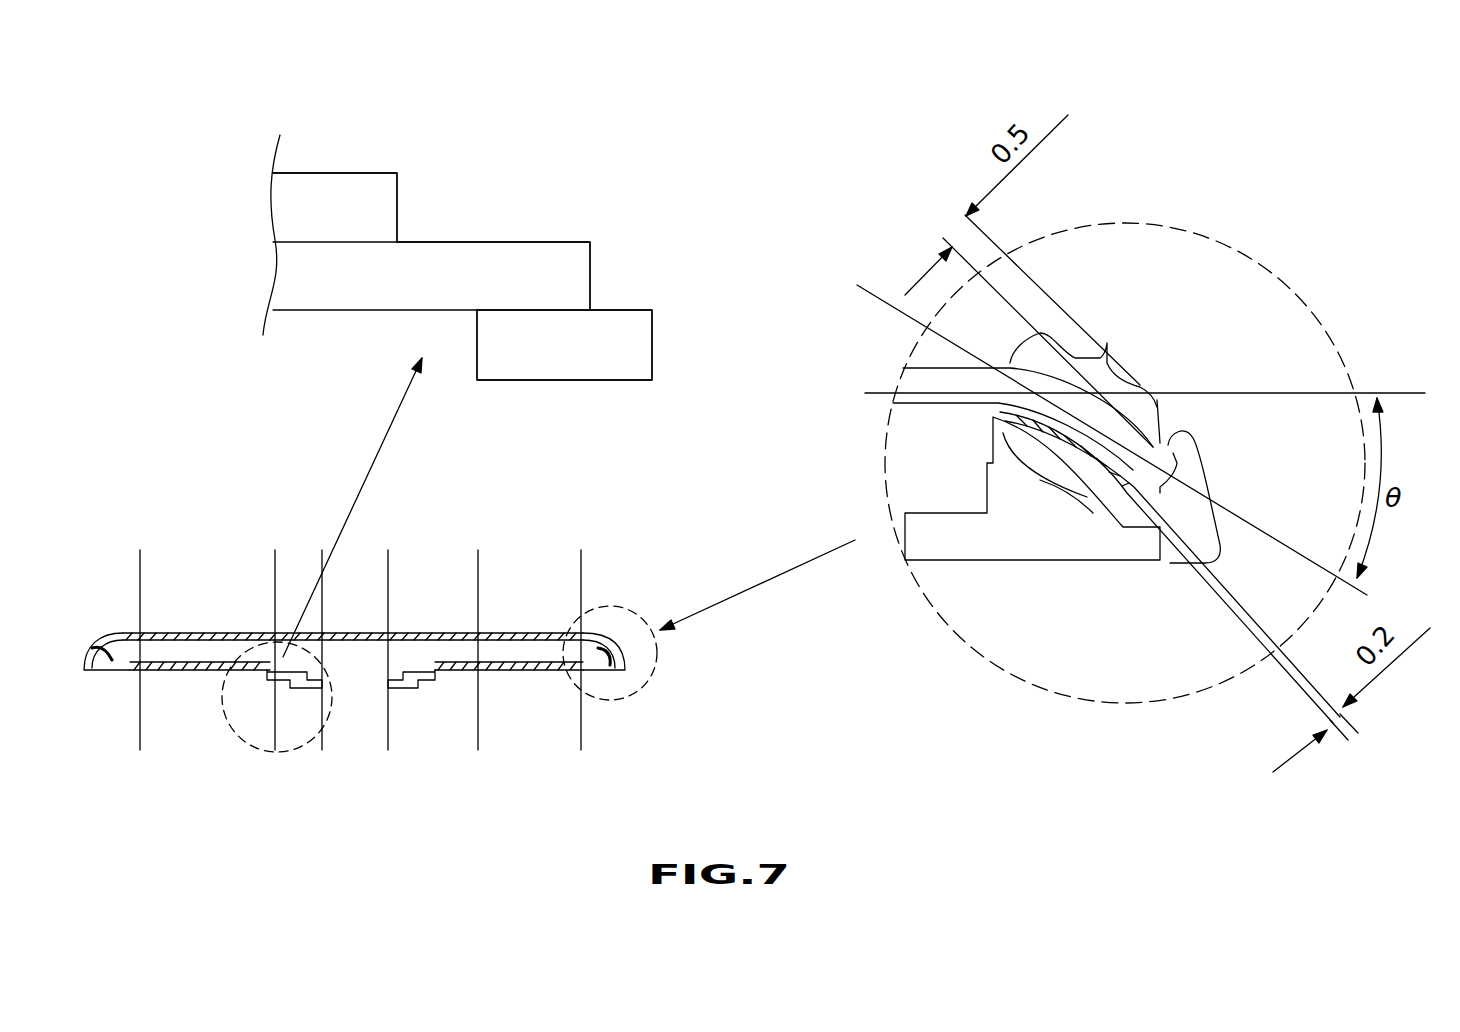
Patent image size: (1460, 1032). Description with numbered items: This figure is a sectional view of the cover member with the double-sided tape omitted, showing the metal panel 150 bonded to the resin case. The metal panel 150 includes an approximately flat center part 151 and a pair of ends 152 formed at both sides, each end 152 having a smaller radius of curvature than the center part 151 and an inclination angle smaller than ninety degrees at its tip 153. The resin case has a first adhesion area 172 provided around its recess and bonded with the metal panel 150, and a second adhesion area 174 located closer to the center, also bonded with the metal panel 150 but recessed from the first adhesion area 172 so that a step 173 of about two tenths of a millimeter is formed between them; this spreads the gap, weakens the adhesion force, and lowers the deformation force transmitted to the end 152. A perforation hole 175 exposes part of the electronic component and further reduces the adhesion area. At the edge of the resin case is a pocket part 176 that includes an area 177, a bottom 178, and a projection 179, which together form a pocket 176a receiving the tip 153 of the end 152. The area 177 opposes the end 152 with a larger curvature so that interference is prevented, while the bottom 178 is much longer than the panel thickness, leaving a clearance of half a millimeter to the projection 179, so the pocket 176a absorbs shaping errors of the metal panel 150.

The metal panel 150 is at (1008, 393).
The center part 151 is at (980, 425).
The end 152 is at (1128, 342).
The tip 153 is at (1153, 445).
The first adhesion area 172 is at (331, 194).
The step 173 is at (606, 173).
The second adhesion area 174 is at (600, 122).
The perforation hole 175 is at (358, 680).
The pocket part 176 is at (1206, 535).
The pocket 176a is at (1168, 445).
The area 177 is at (1047, 490).
The bottom 178 is at (1137, 490).
The projection 179 is at (1203, 438).